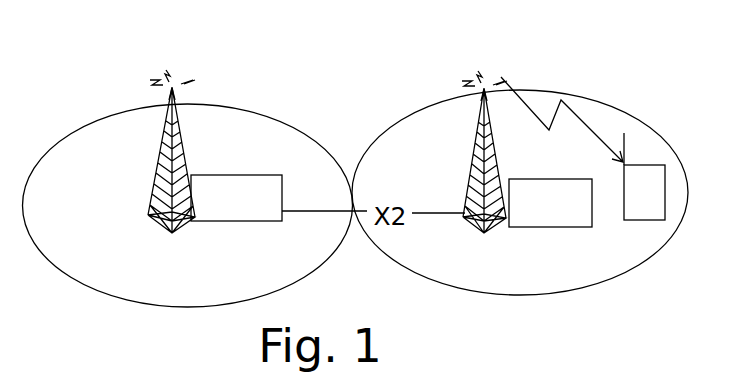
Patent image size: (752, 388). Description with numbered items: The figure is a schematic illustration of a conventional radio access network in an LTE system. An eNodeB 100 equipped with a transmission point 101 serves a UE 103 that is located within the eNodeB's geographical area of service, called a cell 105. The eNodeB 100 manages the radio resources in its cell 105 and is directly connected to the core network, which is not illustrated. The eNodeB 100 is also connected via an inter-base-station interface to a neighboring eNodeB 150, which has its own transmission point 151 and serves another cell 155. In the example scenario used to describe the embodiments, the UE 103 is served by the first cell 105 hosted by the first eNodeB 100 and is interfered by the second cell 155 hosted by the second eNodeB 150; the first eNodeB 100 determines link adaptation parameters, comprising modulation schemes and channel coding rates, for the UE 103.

The eNodeB 100 is at (521, 221).
The transmission point 101 is at (492, 75).
The UE 103 is at (626, 221).
The cell 105 is at (598, 111).
The neighboring eNodeB 150 is at (234, 223).
The transmission point 151 is at (171, 77).
The cell 155 is at (272, 125).